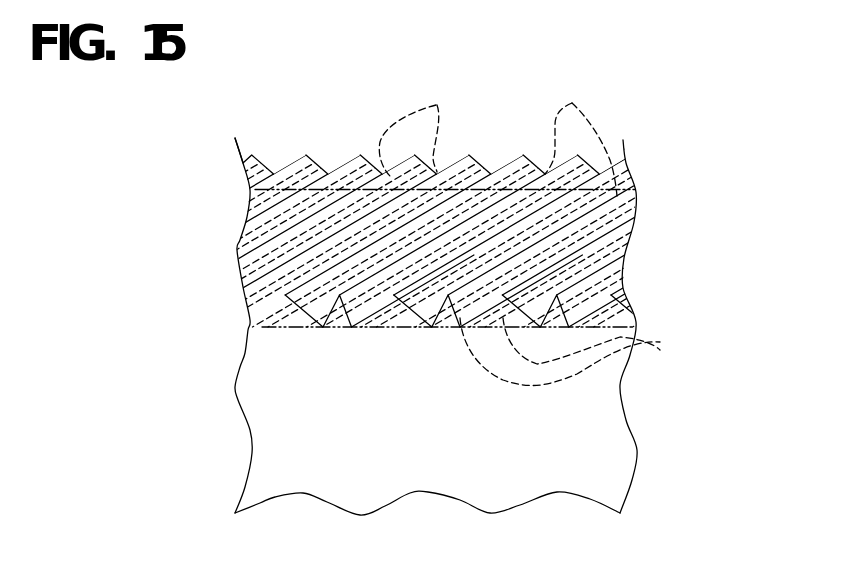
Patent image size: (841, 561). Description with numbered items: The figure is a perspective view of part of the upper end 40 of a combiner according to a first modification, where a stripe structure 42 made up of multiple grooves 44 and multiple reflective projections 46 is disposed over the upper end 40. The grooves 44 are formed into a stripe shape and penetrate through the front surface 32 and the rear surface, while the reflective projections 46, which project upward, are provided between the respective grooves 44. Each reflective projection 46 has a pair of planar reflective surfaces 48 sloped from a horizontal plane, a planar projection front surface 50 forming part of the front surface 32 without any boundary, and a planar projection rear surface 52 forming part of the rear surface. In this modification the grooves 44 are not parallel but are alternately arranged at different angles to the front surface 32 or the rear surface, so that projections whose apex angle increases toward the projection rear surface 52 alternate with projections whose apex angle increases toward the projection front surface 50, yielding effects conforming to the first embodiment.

The front surface 32 is at (400, 431).
The upper end 40 is at (420, 223).
The stripe structure 42 is at (662, 194).
The grooves 44 is at (577, 352).
The reflective projections 46 is at (267, 215).
The reflective surfaces 48 is at (477, 170).
The projection front surface 50 is at (337, 323).
The projection rear surface 52 is at (581, 135).